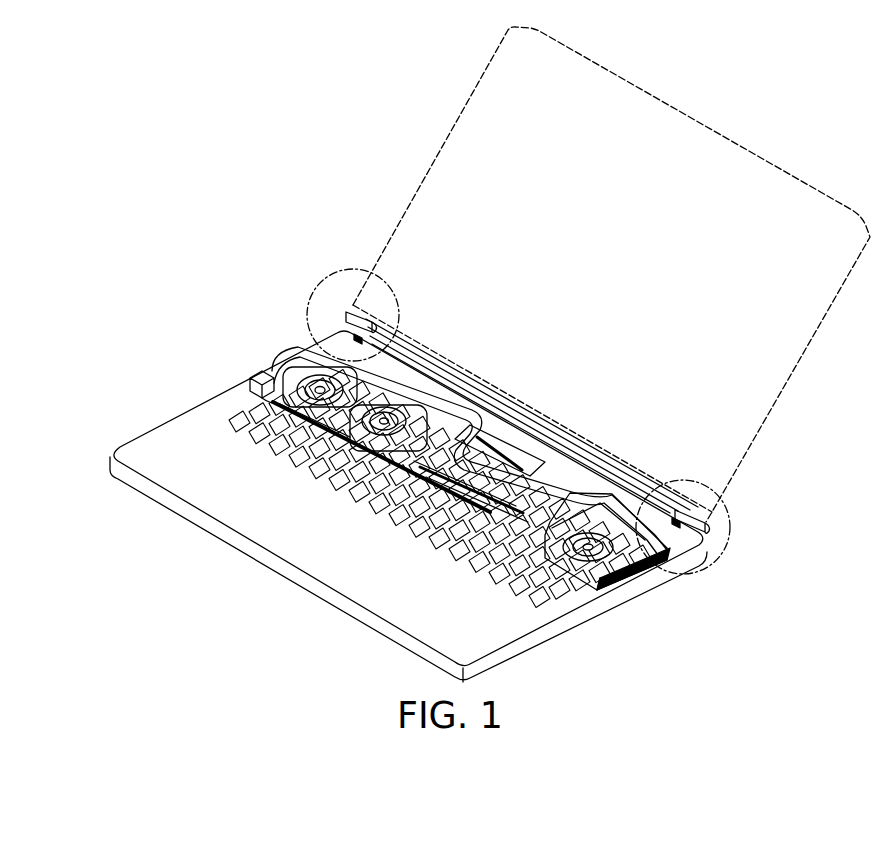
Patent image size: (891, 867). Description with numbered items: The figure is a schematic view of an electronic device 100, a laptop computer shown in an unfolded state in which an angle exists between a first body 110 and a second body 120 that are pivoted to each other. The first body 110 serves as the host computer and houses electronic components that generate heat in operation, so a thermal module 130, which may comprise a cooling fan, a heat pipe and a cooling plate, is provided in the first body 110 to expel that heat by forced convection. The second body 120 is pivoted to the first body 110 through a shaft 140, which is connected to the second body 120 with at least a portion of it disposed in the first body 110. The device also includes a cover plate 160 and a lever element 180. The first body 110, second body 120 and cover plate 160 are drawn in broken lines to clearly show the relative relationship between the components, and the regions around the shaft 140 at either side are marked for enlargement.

The electronic device 100 is at (490, 354).
The first body 110 is at (245, 572).
The second body 120 is at (712, 114).
The thermal module 130 is at (630, 596).
The shaft 140 is at (702, 526).
The cover plate 160 is at (624, 456).
The lever element 180 is at (682, 530).